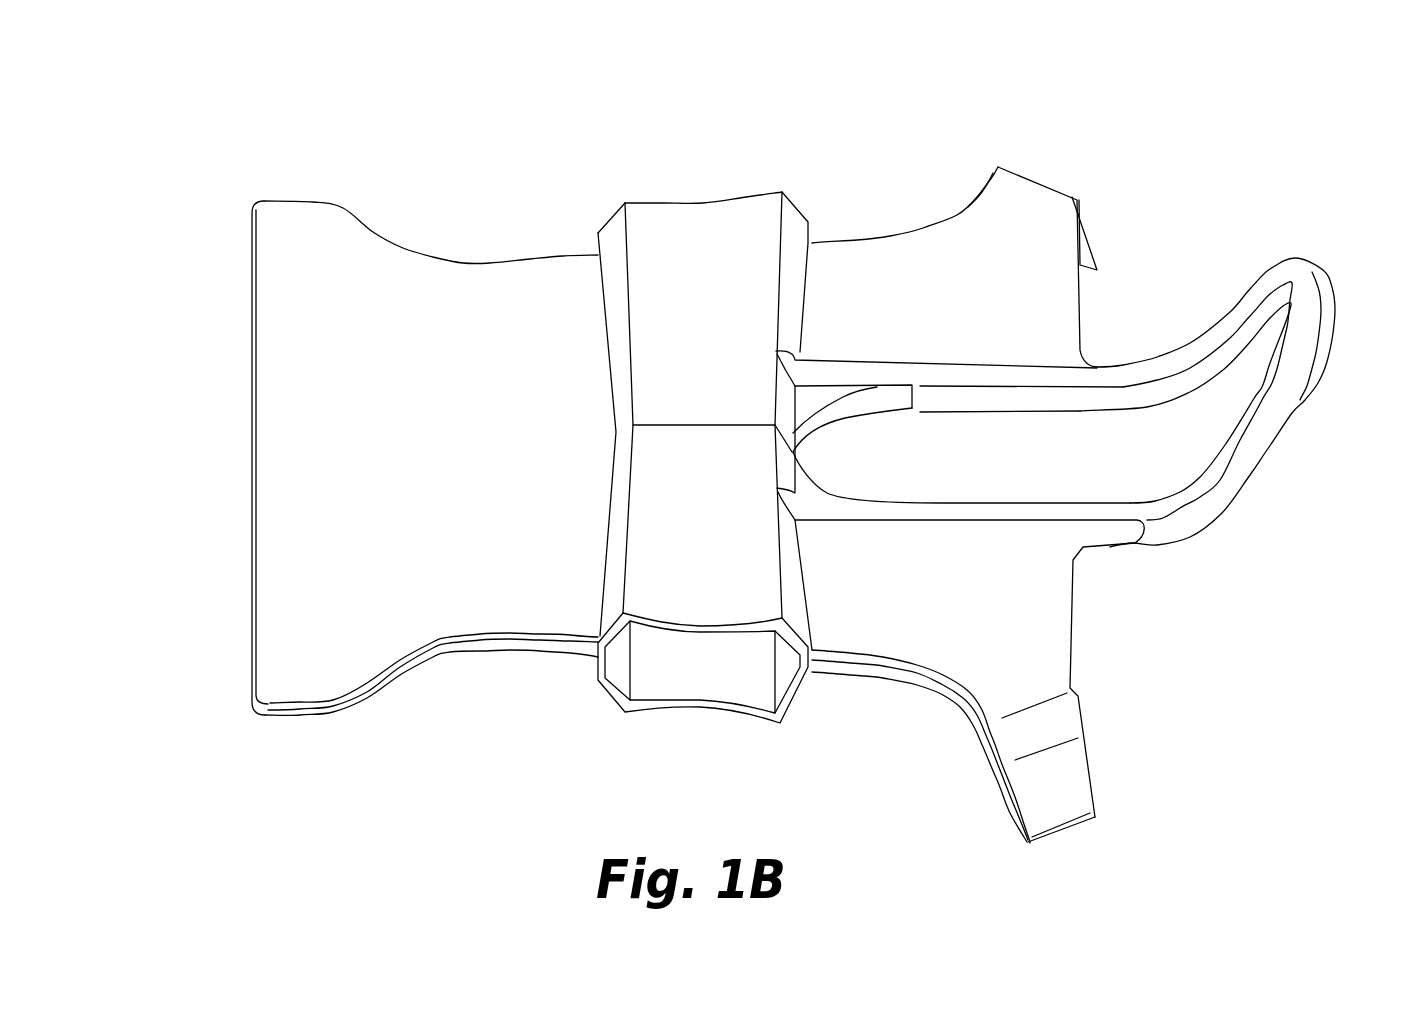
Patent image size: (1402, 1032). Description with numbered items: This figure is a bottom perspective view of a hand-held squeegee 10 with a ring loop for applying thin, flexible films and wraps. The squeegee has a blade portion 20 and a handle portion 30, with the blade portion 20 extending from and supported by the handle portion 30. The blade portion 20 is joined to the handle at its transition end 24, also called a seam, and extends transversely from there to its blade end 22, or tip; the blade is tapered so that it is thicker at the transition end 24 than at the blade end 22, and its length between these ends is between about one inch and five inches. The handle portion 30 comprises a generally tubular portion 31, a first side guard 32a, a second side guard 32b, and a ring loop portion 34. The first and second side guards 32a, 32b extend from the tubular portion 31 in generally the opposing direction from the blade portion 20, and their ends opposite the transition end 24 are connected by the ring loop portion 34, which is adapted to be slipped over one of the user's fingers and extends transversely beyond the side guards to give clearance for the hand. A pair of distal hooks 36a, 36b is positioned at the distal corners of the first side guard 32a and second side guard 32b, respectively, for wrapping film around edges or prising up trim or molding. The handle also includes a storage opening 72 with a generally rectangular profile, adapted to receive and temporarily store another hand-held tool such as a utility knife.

The hand-held squeegee 10 is at (1209, 96).
The blade portion 20 is at (431, 462).
The blade end 22 is at (238, 520).
The transition end 24 is at (590, 564).
The handle portion 30 is at (838, 168).
The tubular portion 31 is at (705, 250).
The first side guard 32a is at (956, 312).
The second side guard 32b is at (951, 611).
The ring loop portion 34 is at (1277, 415).
The distal hook 36a is at (1097, 267).
The distal hook 36b is at (1068, 826).
The storage opening 72 is at (706, 665).